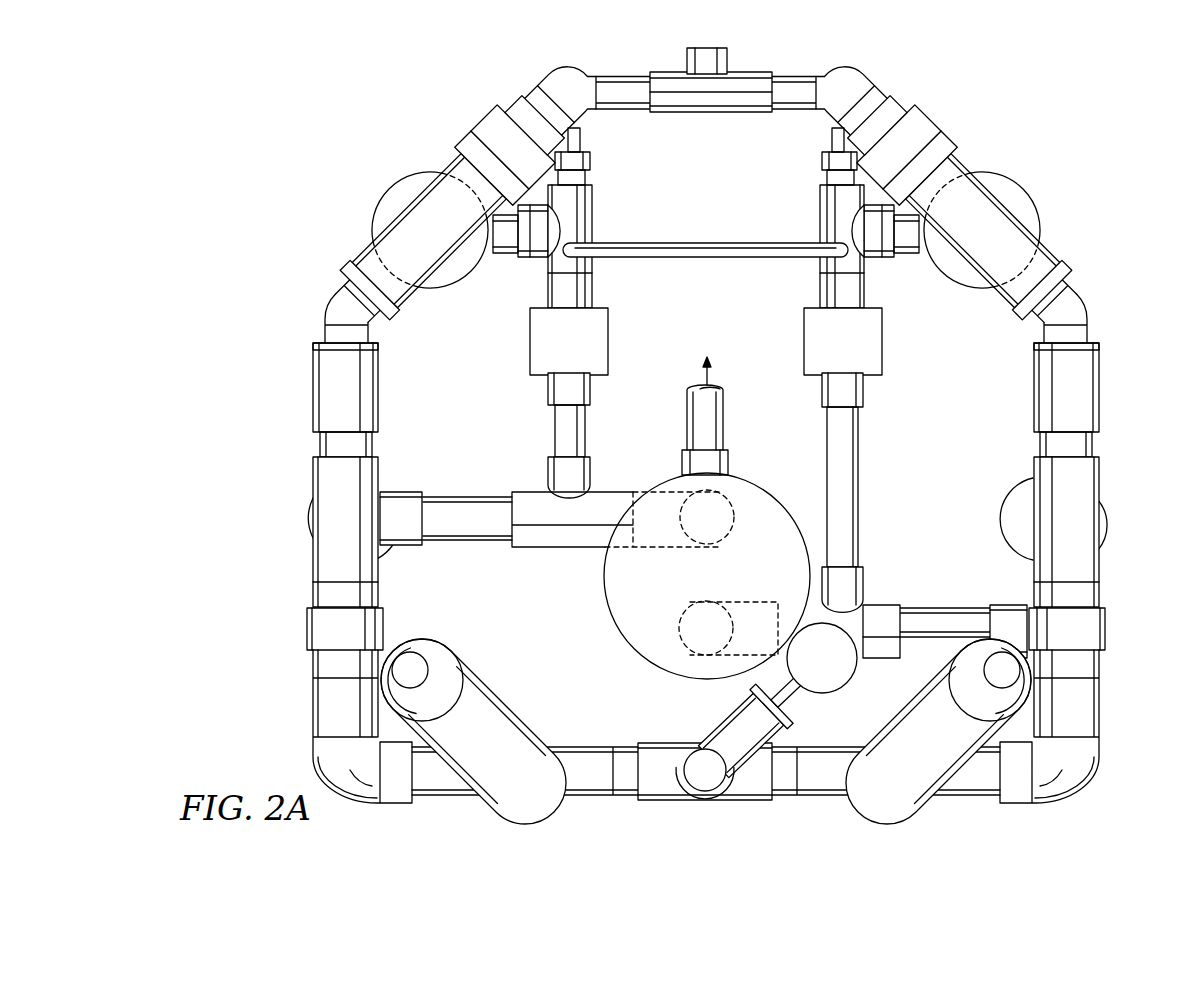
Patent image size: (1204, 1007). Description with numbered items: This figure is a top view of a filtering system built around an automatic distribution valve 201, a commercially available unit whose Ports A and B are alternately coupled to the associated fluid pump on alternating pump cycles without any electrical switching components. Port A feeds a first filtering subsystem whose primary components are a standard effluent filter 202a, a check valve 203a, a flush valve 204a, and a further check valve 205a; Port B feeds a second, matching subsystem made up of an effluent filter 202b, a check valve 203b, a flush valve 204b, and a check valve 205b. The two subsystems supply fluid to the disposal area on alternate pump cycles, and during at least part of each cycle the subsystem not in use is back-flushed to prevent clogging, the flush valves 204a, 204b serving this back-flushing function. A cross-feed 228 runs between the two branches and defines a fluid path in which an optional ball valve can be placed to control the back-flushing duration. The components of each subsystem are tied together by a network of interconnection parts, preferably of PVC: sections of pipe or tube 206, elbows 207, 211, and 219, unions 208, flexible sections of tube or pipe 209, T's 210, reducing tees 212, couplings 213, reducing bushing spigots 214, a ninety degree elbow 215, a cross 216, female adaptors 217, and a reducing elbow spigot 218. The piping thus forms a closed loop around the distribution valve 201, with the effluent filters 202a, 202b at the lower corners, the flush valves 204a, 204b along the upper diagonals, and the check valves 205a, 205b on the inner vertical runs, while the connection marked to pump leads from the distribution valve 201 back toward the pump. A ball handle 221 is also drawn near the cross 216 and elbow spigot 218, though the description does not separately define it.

The automatic distribution valve 201 is at (606, 608).
The effluent filter 202a is at (507, 699).
The effluent filter 202b is at (940, 793).
The check valve 203a is at (390, 555).
The check valve 203b is at (1022, 485).
The flush valve 204a is at (399, 180).
The flush valve 204b is at (1029, 167).
The check valve 205a is at (530, 340).
The check valve 205b is at (884, 340).
The sections of pipe or tube 206 is at (320, 445).
The elbow 207 is at (313, 750).
The union 208 is at (307, 632).
The flexible section of tube or pipe 209 is at (555, 430).
The T 210 is at (313, 478).
The elbow 211 is at (325, 316).
The reducing tee 212 is at (535, 548).
The coupling 213 is at (313, 385).
The reducing bushing spigot 214 is at (313, 345).
The 90 degree elbow 215 is at (684, 772).
The cross 216 is at (688, 800).
The female adaptor 217 is at (627, 747).
The reducing elbow spigot 218 is at (755, 692).
The elbow 219 is at (410, 492).
The ball handle 221 is at (823, 693).
The cross-feed 228 is at (672, 242).